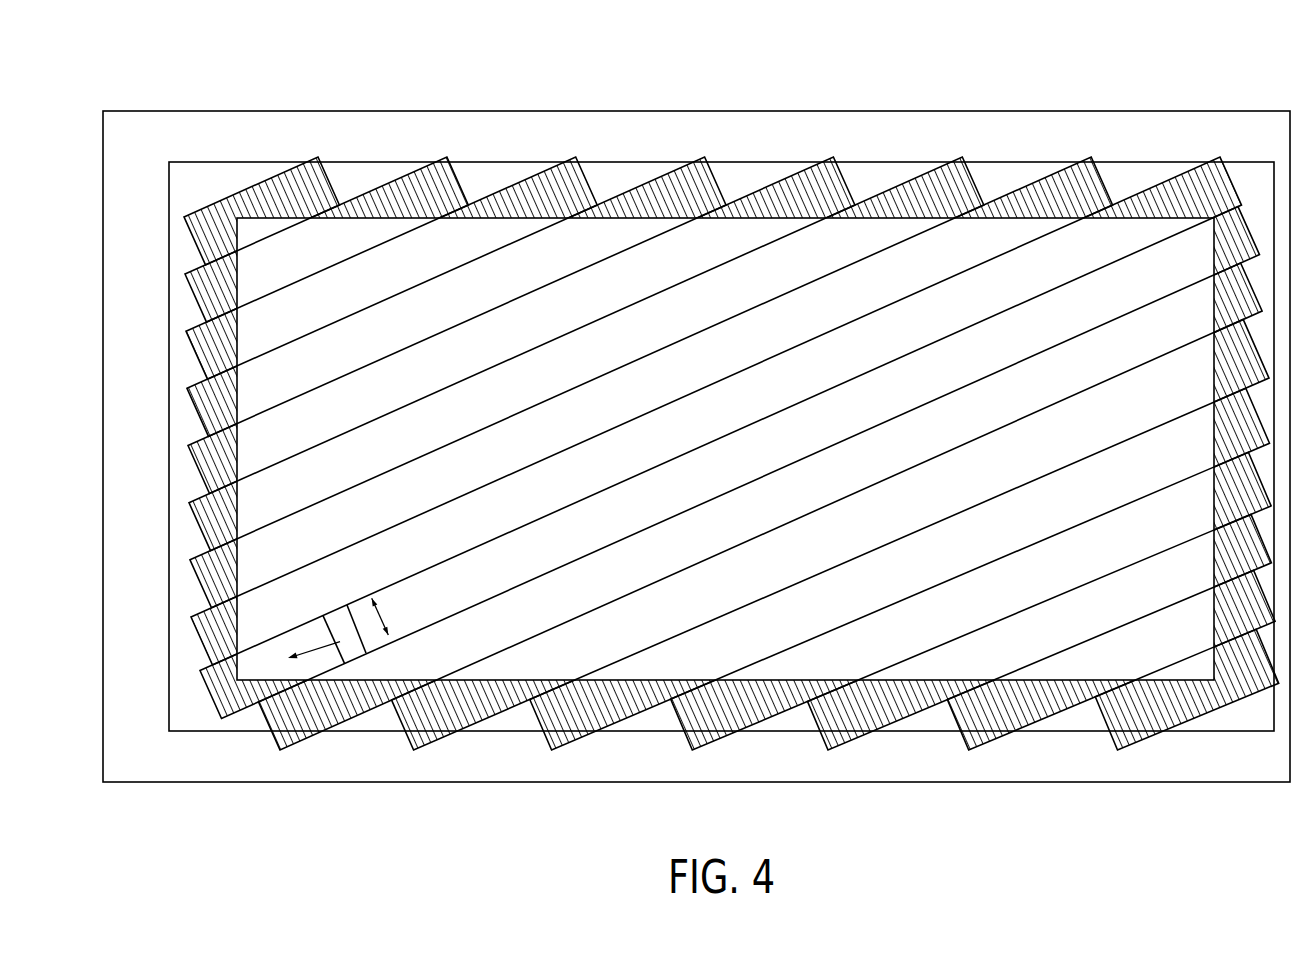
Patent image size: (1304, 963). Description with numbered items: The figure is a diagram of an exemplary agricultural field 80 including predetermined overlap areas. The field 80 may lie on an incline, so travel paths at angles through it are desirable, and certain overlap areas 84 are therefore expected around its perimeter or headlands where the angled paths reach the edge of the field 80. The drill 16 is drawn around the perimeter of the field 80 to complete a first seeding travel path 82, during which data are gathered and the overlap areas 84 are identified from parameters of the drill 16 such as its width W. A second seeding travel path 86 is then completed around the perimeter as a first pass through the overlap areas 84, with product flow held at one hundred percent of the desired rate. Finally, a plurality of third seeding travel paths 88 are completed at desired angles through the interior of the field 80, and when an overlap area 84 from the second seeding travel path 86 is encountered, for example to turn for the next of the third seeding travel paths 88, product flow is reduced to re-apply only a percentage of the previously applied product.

The agricultural field 80 is at (696, 439).
The first seeding travel path 82 is at (614, 758).
The overlap areas 84 is at (741, 735).
The second seeding travel path 86 is at (829, 716).
The third seeding travel paths 88 is at (510, 572).
The drill 16 is at (360, 656).